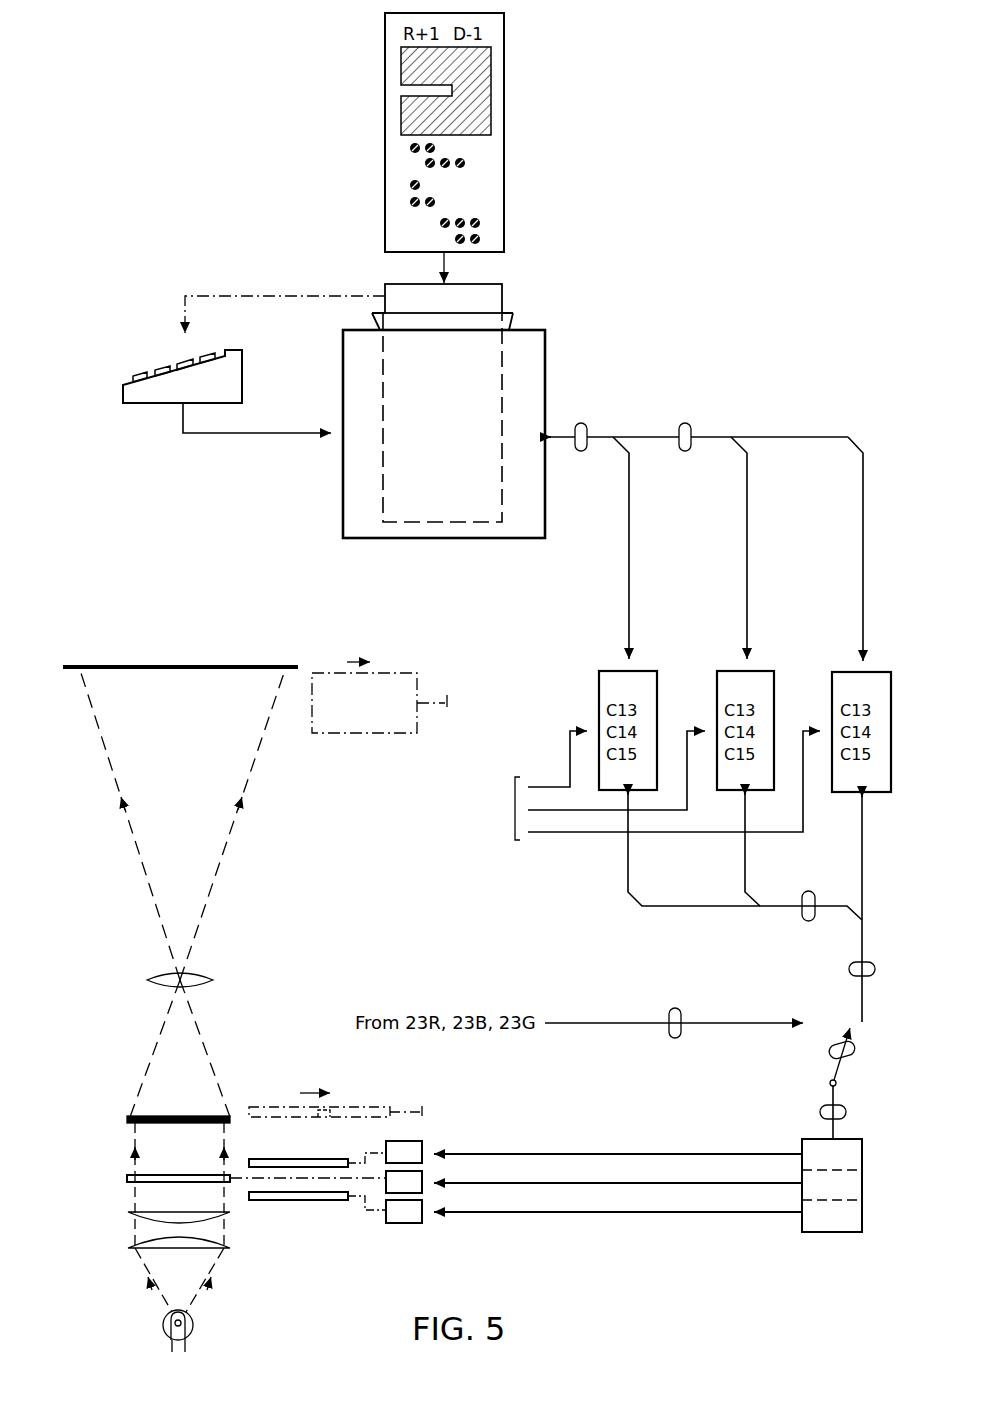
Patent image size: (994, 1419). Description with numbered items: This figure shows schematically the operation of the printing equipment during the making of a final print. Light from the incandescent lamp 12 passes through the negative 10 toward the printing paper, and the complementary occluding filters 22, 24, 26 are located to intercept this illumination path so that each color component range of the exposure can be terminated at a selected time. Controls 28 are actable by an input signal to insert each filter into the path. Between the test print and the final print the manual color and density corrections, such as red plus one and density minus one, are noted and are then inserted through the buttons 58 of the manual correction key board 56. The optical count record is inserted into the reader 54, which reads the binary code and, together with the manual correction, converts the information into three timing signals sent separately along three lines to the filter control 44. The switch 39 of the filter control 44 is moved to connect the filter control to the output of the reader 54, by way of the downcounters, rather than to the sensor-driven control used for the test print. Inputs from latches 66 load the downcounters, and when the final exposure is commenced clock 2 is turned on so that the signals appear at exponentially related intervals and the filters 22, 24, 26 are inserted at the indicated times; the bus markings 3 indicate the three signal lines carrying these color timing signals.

The negative 10 is at (188, 1117).
The incandescent lamp 12 is at (195, 1320).
The filter 22 is at (314, 1159).
The filter 24 is at (188, 1175).
The filter 26 is at (314, 1201).
The controls 28 is at (403, 1224).
The switch 39 is at (817, 1057).
The filter control 44 is at (822, 1233).
The reader 54 is at (546, 344).
The manual correction key board 56 is at (158, 395).
The buttons 58 is at (162, 368).
The latches 66 is at (587, 785).
The three-line bus 3 is at (732, 762).
The clock 2 is at (747, 673).